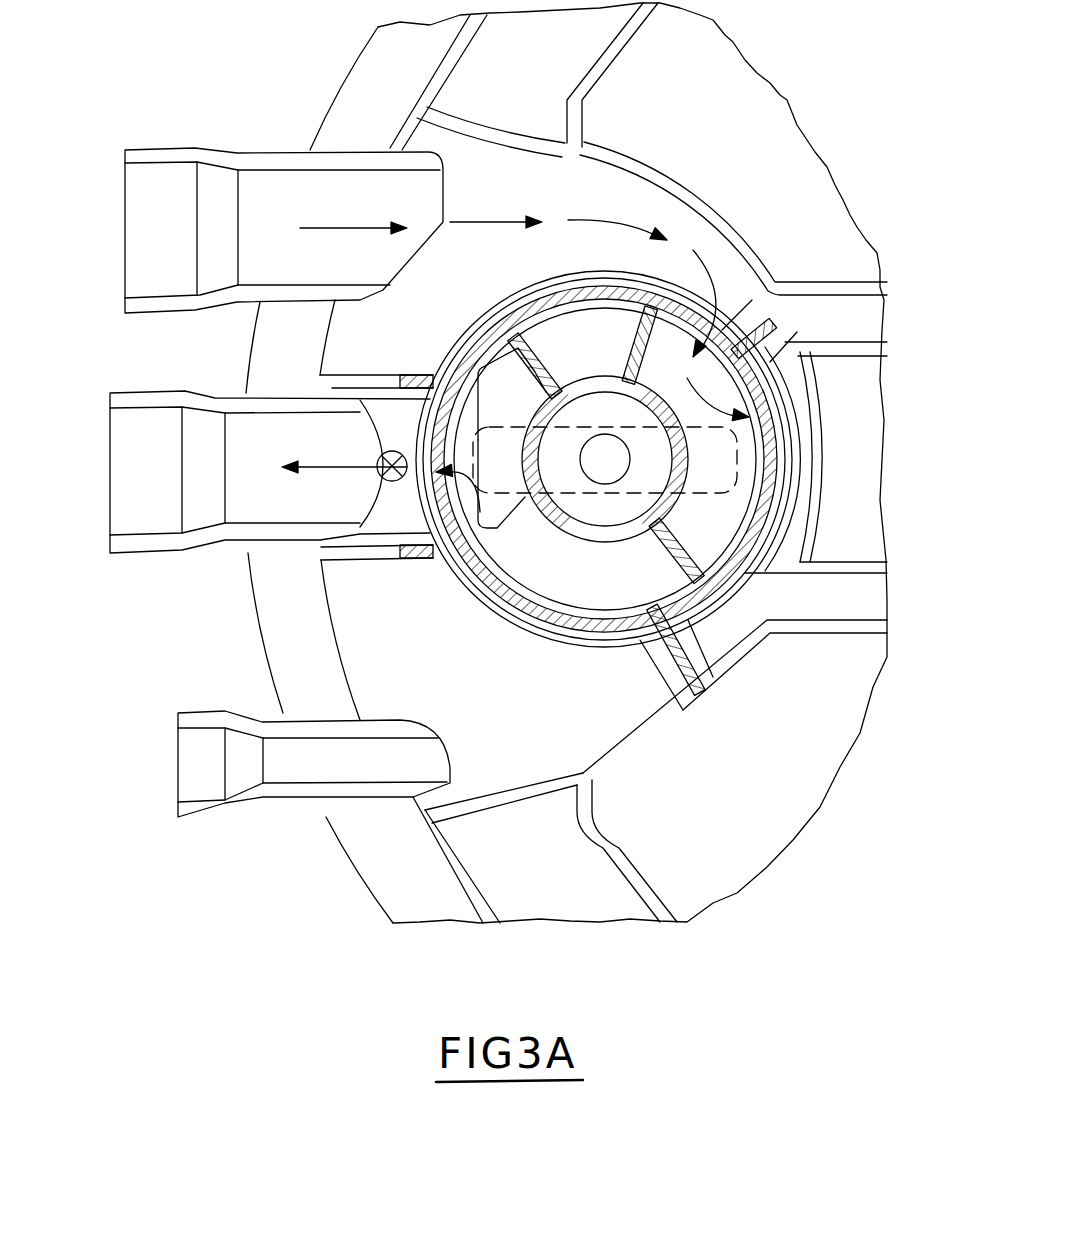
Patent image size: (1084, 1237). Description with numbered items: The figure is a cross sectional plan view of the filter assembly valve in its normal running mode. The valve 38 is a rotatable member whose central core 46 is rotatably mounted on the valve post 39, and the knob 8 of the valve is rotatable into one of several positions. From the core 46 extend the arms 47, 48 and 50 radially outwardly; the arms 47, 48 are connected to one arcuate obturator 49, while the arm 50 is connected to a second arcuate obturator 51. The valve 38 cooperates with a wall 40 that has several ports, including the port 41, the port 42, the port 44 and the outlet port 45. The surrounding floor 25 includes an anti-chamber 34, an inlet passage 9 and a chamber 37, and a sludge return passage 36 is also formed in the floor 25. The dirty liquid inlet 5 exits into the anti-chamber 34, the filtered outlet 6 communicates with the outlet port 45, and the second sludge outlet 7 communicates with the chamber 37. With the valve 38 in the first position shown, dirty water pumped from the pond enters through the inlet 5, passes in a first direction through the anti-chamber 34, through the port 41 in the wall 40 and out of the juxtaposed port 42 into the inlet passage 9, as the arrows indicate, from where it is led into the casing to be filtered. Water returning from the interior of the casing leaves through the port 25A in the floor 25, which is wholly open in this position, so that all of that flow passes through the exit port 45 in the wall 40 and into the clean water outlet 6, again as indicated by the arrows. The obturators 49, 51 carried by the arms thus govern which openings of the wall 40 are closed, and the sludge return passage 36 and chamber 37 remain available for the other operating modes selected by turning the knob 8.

The dirty liquid inlet 5 is at (140, 213).
The filtered outlet 6 is at (135, 478).
The sludge outlet 7 is at (197, 767).
The knob 8 is at (703, 477).
The inlet passage 9 is at (857, 463).
The floor 25 is at (367, 77).
The port 25A is at (530, 517).
The anti-chamber 34 is at (580, 190).
The sludge return passage 36 is at (867, 598).
The chamber 37 is at (370, 635).
The valve 38 is at (607, 463).
The valve post 39 is at (650, 390).
The wall 40 is at (550, 293).
The port 41 is at (677, 310).
The port 42 is at (788, 430).
The port 44 is at (557, 617).
The outlet port 45 is at (445, 438).
The central core 46 is at (593, 527).
The arm 47 is at (627, 357).
The arm 48 is at (547, 377).
The arcuate obturator 49 is at (480, 340).
The arm 50 is at (670, 560).
The arcuate obturator 51 is at (550, 600).